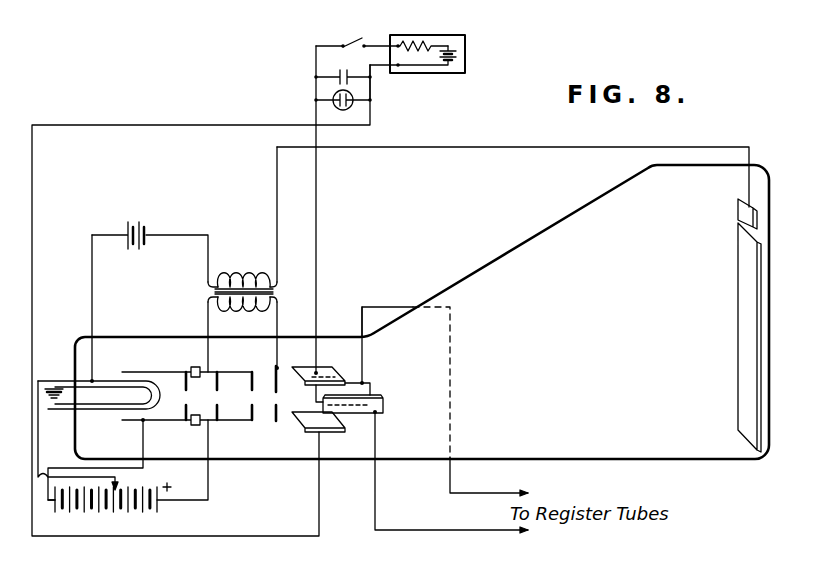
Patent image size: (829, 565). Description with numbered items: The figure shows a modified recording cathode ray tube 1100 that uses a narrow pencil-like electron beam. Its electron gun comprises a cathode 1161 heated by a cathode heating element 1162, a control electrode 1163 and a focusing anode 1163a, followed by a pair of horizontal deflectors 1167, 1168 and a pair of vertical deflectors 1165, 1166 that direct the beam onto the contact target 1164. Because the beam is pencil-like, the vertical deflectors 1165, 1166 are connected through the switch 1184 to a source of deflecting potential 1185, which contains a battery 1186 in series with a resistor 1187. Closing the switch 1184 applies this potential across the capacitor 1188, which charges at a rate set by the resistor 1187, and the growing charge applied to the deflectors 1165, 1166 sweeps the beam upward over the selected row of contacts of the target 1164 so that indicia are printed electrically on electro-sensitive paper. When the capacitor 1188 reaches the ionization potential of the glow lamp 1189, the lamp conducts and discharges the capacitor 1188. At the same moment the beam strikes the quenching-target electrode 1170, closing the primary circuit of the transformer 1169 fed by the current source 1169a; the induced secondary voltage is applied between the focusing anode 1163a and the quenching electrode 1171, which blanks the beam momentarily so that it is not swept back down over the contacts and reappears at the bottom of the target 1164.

The recording cathode ray tube 1100 is at (430, 468).
The cathode 1161 is at (102, 378).
The cathode heating element 1162 is at (102, 407).
The control electrode 1163 is at (160, 370).
The focusing anode 1163a is at (235, 370).
The contact target 1164 is at (743, 271).
The vertical deflector 1165 is at (332, 369).
The vertical deflector 1166 is at (330, 430).
The horizontal deflector 1167 is at (383, 399).
The horizontal deflector 1168 is at (370, 383).
The transformer 1169 is at (213, 292).
The current source 1169a is at (142, 222).
The quenching-target electrode 1170 is at (738, 209).
The quenching electrode 1171 is at (267, 420).
The switch 1184 is at (357, 37).
The source of deflecting potential 1185 is at (472, 46).
The battery 1186 is at (457, 60).
The resistor 1187 is at (420, 40).
The capacitor 1188 is at (340, 66).
The glow lamp 1189 is at (333, 103).